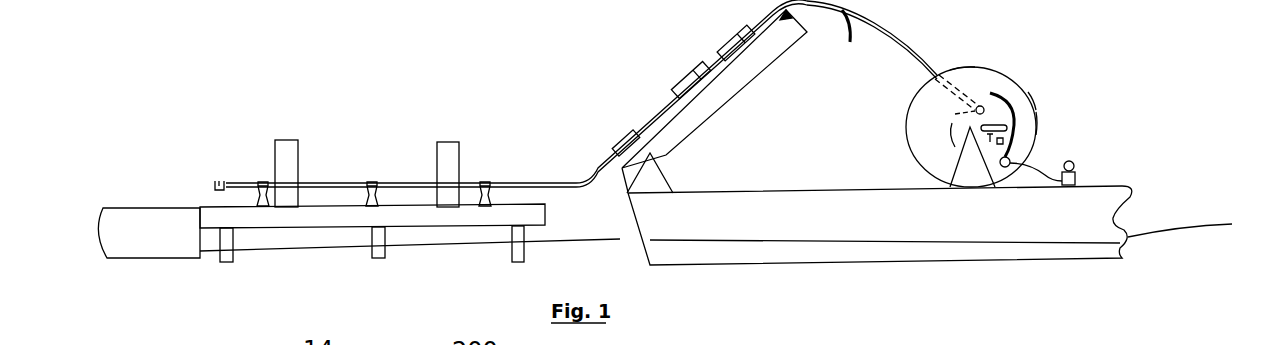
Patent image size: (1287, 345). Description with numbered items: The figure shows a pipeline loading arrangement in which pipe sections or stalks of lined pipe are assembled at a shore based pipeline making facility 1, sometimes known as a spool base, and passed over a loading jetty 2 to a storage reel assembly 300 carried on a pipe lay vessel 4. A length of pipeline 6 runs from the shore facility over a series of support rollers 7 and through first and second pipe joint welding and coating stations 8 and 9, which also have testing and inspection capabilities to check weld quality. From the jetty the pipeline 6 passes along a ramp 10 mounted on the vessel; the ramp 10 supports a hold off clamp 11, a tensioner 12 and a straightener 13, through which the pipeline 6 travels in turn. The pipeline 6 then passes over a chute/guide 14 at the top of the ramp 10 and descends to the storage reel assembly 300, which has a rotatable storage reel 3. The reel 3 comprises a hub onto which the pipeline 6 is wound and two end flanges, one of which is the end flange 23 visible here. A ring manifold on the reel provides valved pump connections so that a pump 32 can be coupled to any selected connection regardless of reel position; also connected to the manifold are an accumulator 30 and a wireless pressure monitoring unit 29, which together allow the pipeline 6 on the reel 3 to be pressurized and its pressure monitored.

The shore based pipeline making facility 1 is at (122, 254).
The loading jetty 2 is at (422, 212).
The storage reel 3 is at (928, 118).
The pipe lay vessel 4 is at (812, 200).
The pipeline 6 is at (355, 180).
The support rollers 7 is at (263, 182).
The first pipe joint welding and coating station 8 is at (289, 137).
The second pipe joint welding and coating station 9 is at (433, 138).
The ramp 10 is at (727, 95).
The hold off clamp 11 is at (619, 130).
The tensioner 12 is at (675, 72).
The straightener 13 is at (722, 35).
The chute/guide 14 is at (828, 18).
The end flange 23 is at (962, 76).
The wireless pressure monitoring unit 29 is at (1043, 120).
The accumulator 30 is at (1032, 100).
The pump 32 is at (1076, 157).
The storage reel assembly 300 is at (998, 73).